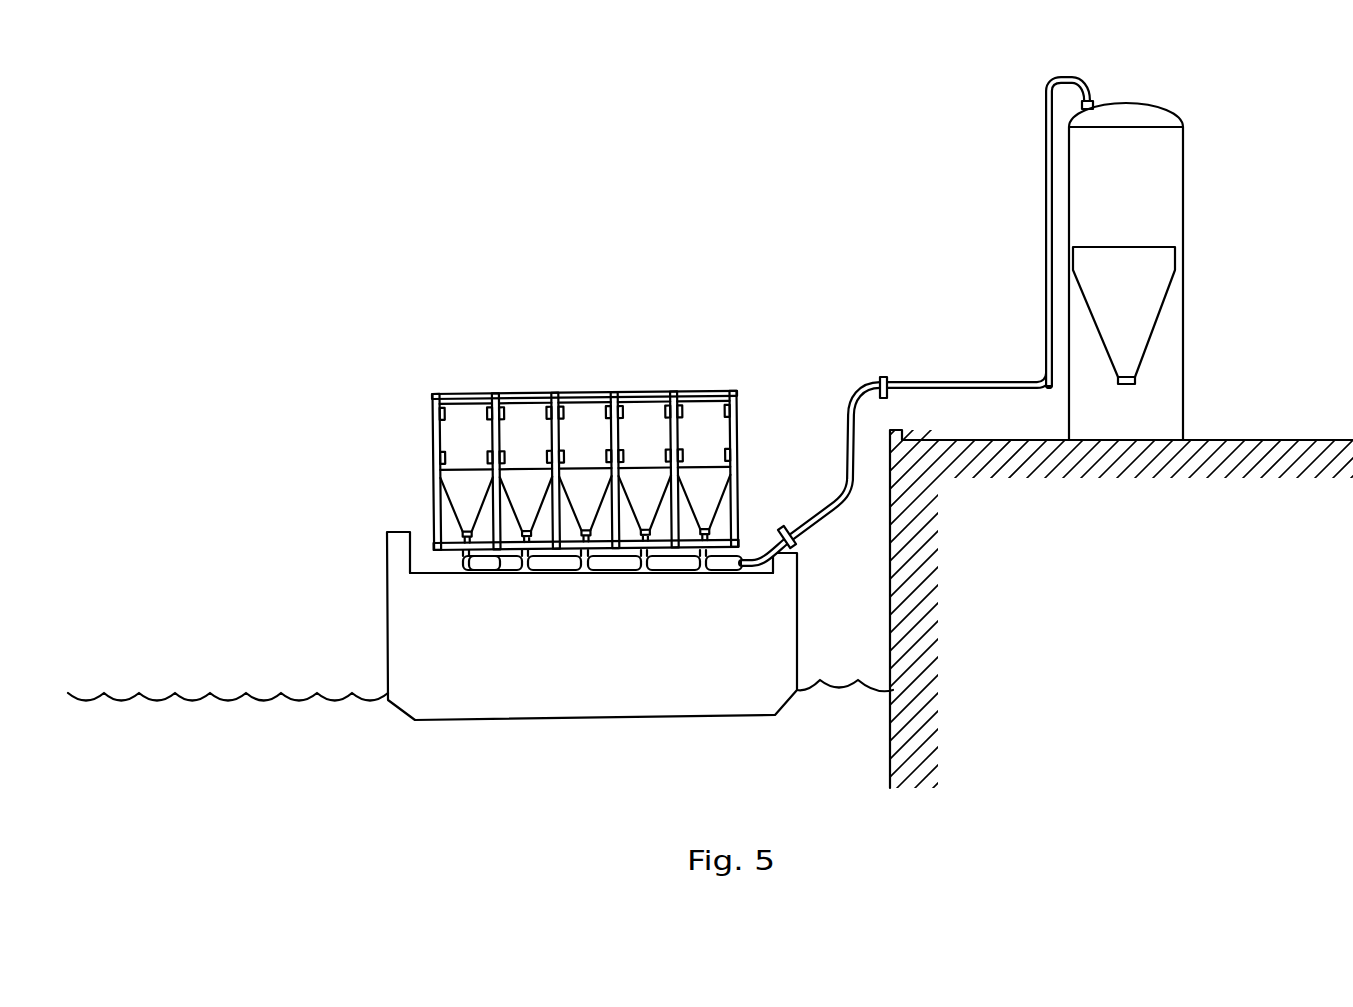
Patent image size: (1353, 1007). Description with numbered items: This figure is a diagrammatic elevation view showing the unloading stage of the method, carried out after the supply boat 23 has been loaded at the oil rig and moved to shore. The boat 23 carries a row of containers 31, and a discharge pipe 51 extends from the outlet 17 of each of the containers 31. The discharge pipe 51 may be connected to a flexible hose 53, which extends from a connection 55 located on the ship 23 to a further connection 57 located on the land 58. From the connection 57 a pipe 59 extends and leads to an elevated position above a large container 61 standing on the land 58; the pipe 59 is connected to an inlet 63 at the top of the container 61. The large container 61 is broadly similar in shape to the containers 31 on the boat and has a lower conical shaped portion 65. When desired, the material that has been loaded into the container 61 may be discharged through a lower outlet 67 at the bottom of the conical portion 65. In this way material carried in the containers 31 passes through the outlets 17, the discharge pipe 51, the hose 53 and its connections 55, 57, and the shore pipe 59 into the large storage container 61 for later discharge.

The outlet 17 is at (727, 573).
The supply boat 23 is at (417, 625).
The containers 31 is at (456, 441).
The discharge pipe 51 is at (623, 573).
The flexible hose 53 is at (842, 467).
The connection 55 is at (797, 543).
The further connection 57 is at (895, 382).
The land 58 is at (1217, 438).
The pipe 59 is at (955, 389).
The large container 61 is at (1158, 199).
The inlet 63 is at (1096, 102).
The lower conical shaped portion 65 is at (1143, 295).
The lower outlet 67 is at (1128, 385).